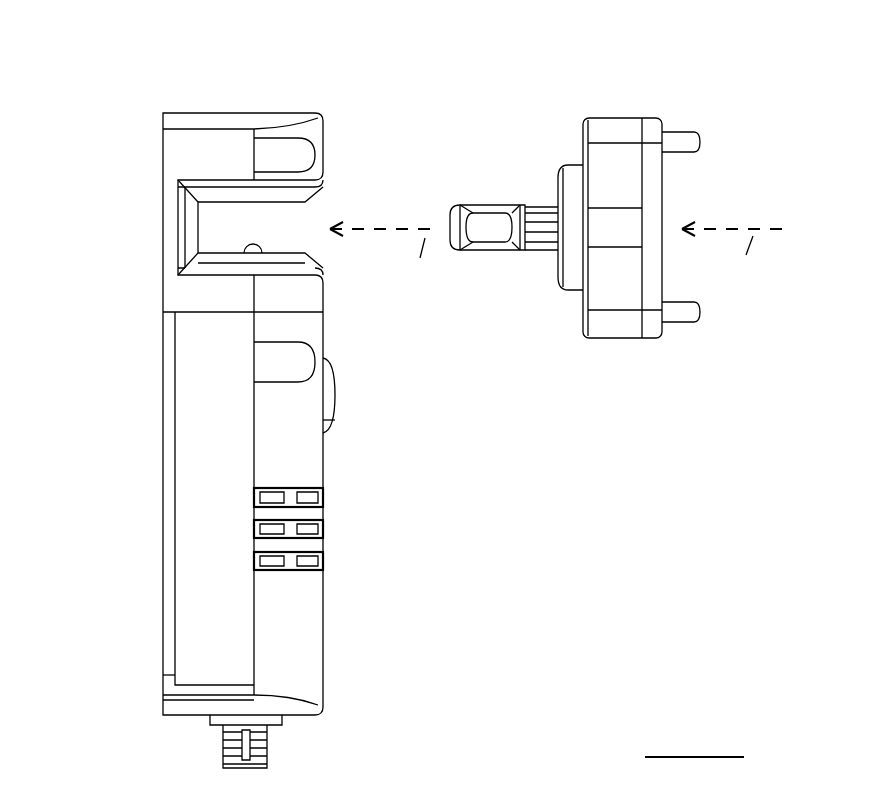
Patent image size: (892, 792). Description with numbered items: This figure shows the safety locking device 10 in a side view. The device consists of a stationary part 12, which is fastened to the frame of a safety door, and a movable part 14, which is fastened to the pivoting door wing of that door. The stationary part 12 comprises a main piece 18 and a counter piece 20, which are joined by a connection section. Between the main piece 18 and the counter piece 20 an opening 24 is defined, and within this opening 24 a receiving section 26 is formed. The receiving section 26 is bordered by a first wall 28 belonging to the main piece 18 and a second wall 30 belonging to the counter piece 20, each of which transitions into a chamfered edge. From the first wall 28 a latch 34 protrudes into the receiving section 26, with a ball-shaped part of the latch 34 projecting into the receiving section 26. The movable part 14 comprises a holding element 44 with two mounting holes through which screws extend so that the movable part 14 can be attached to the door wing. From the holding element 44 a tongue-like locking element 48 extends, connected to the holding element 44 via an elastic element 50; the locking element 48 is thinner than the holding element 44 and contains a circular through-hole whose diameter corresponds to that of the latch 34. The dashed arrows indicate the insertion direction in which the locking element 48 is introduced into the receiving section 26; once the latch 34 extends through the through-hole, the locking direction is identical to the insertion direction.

The safety locking device 10 is at (470, 90).
The stationary part 12 is at (236, 104).
The movable part 14 is at (630, 97).
The main piece 18 is at (313, 598).
The counter piece 20 is at (318, 131).
The opening 24 is at (352, 210).
The receiving section 26 is at (290, 227).
The first wall 28 is at (198, 253).
The second wall 30 is at (225, 202).
The latch 34 is at (253, 243).
The holding element 44 is at (632, 190).
The locking element 48 is at (527, 258).
The elastic element 50 is at (570, 282).